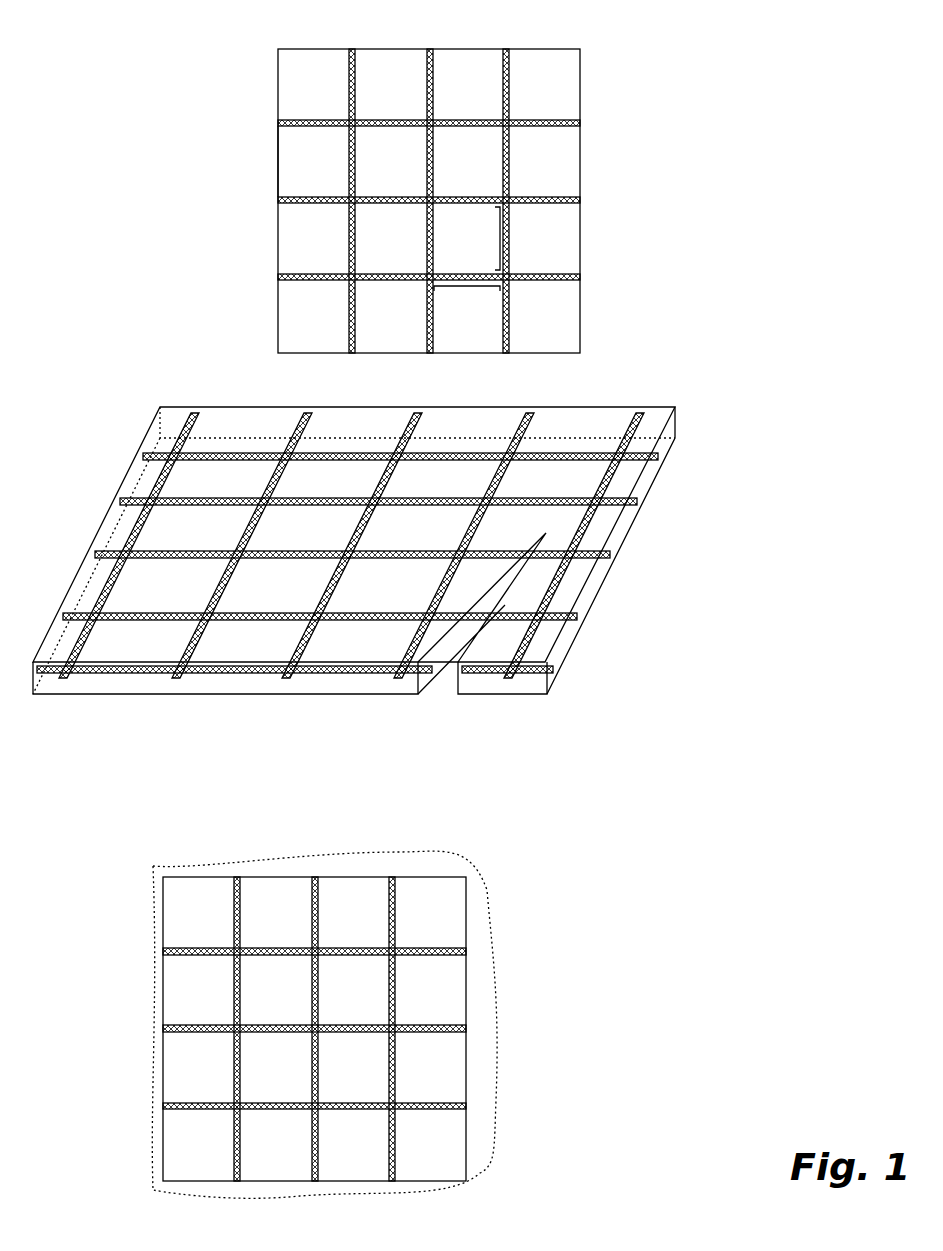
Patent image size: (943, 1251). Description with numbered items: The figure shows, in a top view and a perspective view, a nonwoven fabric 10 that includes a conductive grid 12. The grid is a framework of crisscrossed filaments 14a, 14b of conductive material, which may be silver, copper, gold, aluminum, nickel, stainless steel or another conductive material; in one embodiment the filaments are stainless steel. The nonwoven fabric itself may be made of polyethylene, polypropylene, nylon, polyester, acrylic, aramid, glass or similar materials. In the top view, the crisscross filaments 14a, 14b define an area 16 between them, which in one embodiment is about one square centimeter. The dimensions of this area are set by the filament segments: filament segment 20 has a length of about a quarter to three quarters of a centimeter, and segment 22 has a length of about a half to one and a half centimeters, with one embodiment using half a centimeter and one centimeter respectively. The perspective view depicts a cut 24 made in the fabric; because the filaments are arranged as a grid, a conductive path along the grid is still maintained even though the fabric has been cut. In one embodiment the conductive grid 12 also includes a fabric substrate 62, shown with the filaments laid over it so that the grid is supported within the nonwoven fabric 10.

The nonwoven fabric 10 is at (558, 80).
The conductive grid 12 is at (567, 124).
The filament 14a is at (350, 78).
The filament 14b is at (307, 117).
The area 16 is at (298, 155).
The filament segment 20 is at (493, 240).
The segment 22 is at (467, 286).
The cut 24 is at (435, 710).
The fabric substrate 62 is at (485, 967).